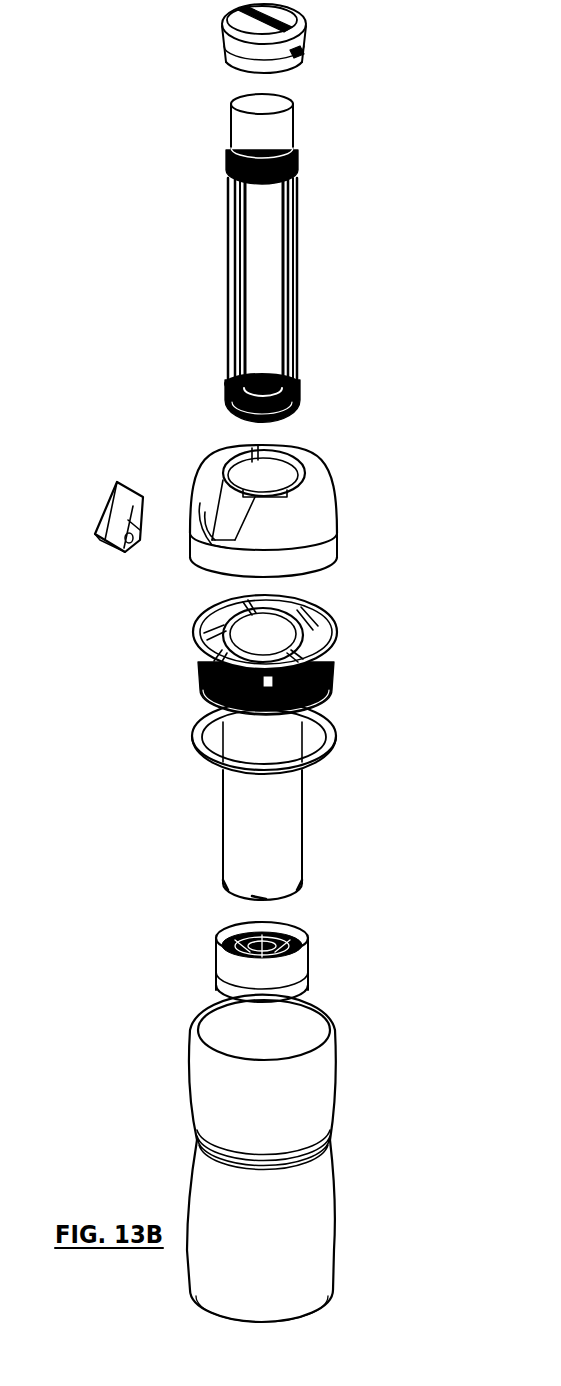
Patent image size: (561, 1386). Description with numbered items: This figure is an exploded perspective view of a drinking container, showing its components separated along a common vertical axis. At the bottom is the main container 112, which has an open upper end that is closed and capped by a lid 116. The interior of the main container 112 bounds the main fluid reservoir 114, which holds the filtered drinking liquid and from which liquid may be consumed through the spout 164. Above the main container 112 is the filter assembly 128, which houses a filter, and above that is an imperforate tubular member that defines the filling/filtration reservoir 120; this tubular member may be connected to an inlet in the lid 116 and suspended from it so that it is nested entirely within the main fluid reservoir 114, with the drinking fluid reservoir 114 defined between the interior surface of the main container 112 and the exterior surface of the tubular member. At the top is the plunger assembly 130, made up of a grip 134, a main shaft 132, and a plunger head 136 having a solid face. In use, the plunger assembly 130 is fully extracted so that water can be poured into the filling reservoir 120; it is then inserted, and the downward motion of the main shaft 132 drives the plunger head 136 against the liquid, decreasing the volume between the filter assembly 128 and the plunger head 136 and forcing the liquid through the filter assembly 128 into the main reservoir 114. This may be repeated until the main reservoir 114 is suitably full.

The plunger assembly 130 is at (188, 144).
The grip 134 is at (300, 52).
The main shaft 132 is at (297, 292).
The plunger head 136 is at (300, 400).
The lid 116 is at (333, 493).
The spout 164 is at (103, 505).
The filling/filtration reservoir 120 is at (280, 841).
The filter assembly 128 is at (310, 963).
The main container 112 is at (335, 1212).
The main fluid reservoir 114 is at (280, 1259).